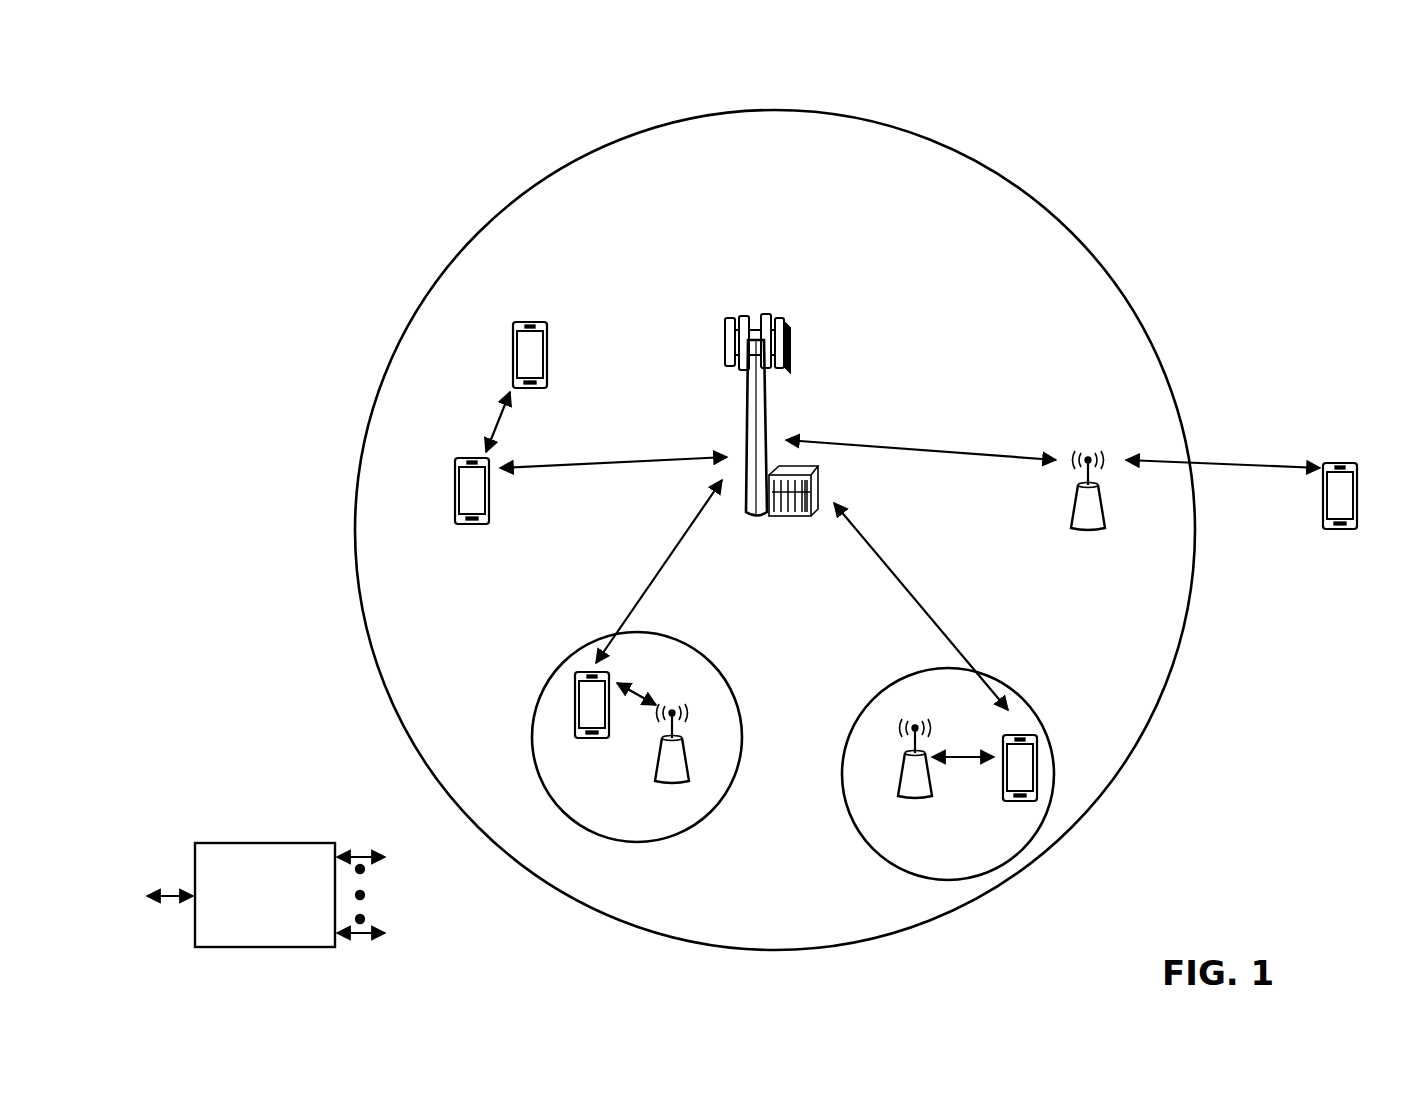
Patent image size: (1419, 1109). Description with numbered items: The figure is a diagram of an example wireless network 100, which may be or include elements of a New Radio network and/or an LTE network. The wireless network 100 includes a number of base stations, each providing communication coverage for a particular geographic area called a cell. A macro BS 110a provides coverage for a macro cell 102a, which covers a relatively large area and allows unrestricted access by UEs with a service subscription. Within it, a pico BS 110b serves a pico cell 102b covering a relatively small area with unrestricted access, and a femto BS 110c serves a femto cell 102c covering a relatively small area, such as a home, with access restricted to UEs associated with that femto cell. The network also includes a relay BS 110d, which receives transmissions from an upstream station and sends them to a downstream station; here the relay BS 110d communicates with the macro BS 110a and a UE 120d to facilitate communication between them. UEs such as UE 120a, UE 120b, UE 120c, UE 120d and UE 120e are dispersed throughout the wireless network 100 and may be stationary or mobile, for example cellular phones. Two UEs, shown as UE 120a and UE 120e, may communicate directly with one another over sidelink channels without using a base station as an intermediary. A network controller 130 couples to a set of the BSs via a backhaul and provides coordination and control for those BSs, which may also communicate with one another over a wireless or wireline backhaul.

The wireless network 100 is at (224, 92).
The macro cell 102a is at (1053, 216).
The pico cell 102b is at (725, 678).
The femto cell 102c is at (893, 686).
The macro BS 110a is at (765, 306).
The pico BS 110b is at (690, 768).
The femto BS 110c is at (894, 782).
The relay BS 110d is at (1088, 452).
The UE 120a is at (455, 485).
The UE 120b is at (580, 740).
The UE 120c is at (1000, 803).
The UE 120d is at (1354, 462).
The UE 120e is at (513, 346).
The network controller 130 is at (265, 841).